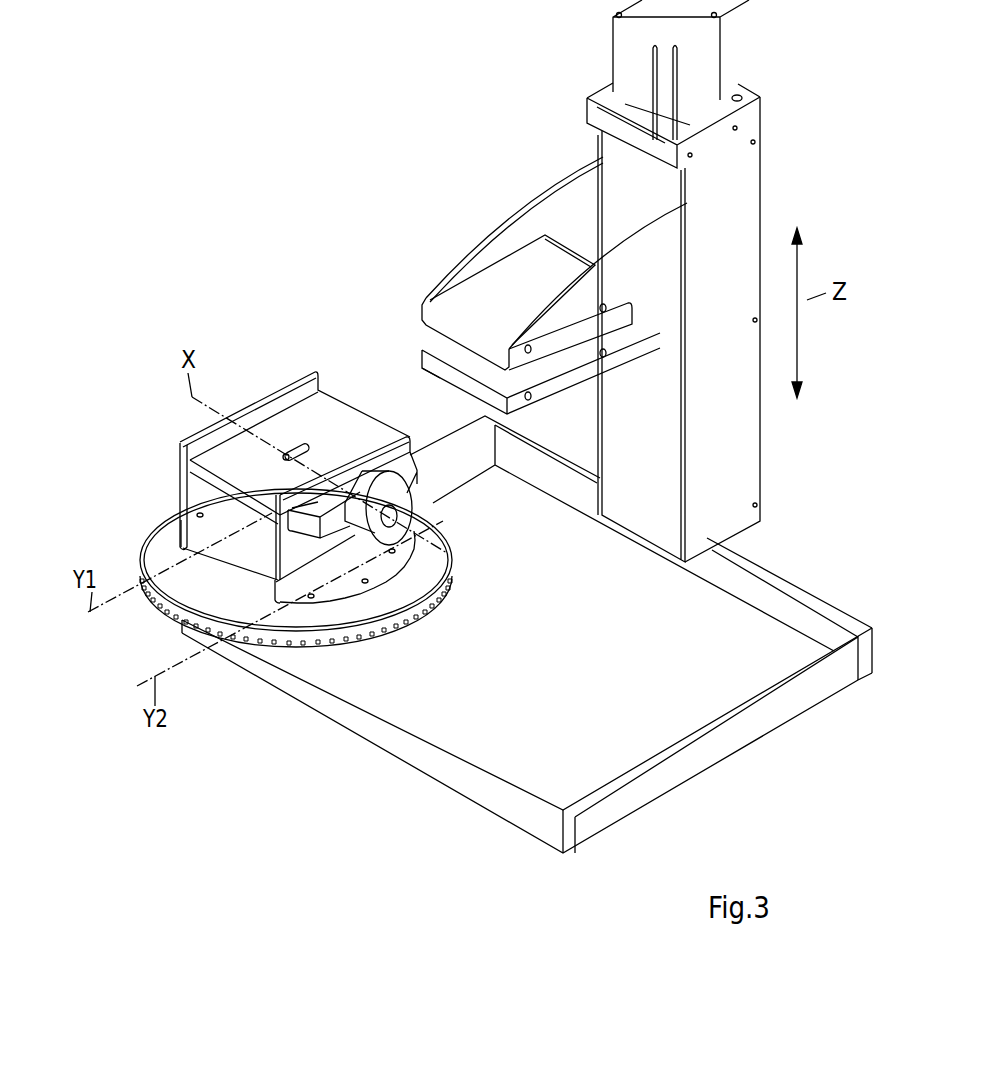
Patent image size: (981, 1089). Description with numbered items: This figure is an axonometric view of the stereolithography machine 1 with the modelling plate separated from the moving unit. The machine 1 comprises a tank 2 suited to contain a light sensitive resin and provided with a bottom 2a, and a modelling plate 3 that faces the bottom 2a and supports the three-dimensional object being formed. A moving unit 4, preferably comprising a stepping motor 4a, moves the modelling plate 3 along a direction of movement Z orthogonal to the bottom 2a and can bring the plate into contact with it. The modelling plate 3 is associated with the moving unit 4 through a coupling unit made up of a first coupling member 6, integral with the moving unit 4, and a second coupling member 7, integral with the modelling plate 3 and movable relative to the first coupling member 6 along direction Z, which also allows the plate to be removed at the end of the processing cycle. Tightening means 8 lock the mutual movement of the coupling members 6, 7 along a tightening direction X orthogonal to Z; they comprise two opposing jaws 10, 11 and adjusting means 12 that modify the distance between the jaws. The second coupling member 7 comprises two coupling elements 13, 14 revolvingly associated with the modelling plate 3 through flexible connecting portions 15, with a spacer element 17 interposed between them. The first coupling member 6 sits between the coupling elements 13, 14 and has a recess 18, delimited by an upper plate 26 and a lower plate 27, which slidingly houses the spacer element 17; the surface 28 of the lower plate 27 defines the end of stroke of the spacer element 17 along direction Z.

The stereolithography machine 1 is at (332, 83).
The tank 2 is at (513, 800).
The bottom 2a is at (743, 632).
The modelling plate 3 is at (212, 595).
The moving unit 4 is at (768, 148).
The stepping motor 4a is at (700, 58).
The first coupling member 6 is at (657, 245).
The second coupling member 7 is at (317, 362).
The tightening means 8 is at (302, 543).
The jaw 10 is at (178, 440).
The jaw 11 is at (345, 497).
The adjusting means 12 is at (373, 527).
The coupling element 13 is at (263, 410).
The coupling element 14 is at (323, 487).
The connecting portions 15 is at (188, 548).
The spacer element 17 is at (240, 447).
The recess 18 is at (465, 345).
The upper plate 26 is at (531, 258).
The lower plate 27 is at (547, 357).
The surface 28 is at (447, 343).